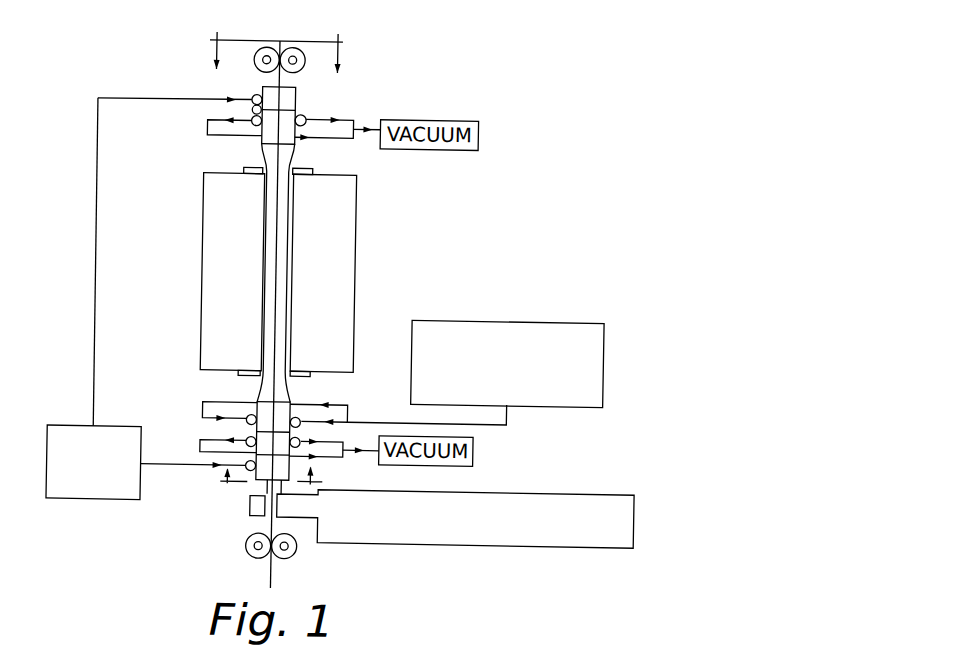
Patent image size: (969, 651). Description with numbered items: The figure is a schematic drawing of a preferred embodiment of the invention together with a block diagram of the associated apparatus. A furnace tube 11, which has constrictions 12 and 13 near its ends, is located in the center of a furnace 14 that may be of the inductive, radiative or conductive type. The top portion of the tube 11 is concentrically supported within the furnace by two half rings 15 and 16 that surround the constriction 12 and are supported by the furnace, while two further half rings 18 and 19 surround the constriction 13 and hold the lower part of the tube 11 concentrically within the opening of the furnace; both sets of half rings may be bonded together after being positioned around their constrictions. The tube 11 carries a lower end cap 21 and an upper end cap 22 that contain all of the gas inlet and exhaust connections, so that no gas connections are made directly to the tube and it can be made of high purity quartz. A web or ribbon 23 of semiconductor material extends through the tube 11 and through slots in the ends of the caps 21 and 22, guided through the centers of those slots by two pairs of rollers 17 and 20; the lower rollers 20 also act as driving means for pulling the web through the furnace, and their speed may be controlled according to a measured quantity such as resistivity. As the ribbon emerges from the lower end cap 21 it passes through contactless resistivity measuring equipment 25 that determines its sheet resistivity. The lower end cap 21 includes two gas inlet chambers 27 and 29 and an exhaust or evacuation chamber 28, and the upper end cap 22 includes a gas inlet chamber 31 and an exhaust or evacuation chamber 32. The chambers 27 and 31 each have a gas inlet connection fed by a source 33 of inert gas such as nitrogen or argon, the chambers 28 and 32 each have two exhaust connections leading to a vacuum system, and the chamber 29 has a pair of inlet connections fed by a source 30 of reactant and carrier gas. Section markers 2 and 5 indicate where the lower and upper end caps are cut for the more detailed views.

The section line 2- 2 is at (268, 478).
The section line 5- 5 is at (279, 48).
The furnace tube 11 is at (269, 260).
The constriction 12 is at (314, 151).
The constriction 13 is at (269, 387).
The furnace 14 is at (205, 201).
The half ring 15 is at (260, 168).
The half ring 16 is at (310, 166).
The rollers 17 is at (254, 56).
The half ring 18 is at (244, 374).
The half ring 19 is at (313, 378).
The rollers 20 is at (306, 547).
The lower end cap 21 is at (247, 432).
The upper end cap 22 is at (251, 108).
The web or ribbon 23 is at (279, 568).
The contactless resistivity measuring equipment 25 is at (598, 477).
The gas inlet chamber 27 is at (273, 482).
The exhaust or evacuation chamber 28 is at (299, 430).
The gas inlet chamber 29 is at (300, 412).
The source of reactant and carrier gas 30 is at (503, 318).
The gas inlet chamber 31 is at (304, 92).
The exhaust or evacuation chamber 32 is at (298, 113).
The source of inert gas 33 is at (91, 503).